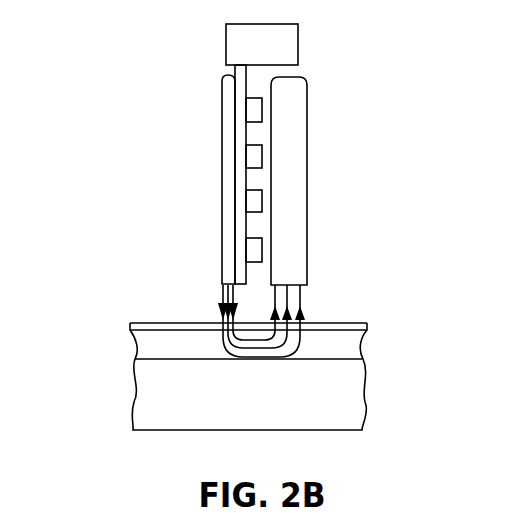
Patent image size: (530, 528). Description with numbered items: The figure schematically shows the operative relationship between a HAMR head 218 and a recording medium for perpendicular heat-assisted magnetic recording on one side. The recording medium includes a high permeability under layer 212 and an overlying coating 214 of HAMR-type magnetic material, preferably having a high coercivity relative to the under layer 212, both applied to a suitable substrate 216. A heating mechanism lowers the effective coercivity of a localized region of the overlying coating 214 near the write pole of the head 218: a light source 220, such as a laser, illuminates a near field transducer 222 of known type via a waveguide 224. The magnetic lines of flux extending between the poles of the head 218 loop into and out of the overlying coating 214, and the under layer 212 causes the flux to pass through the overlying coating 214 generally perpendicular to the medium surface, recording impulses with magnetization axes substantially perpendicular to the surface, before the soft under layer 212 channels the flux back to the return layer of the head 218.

The under layer 212 is at (138, 345).
The overlying coating 214 is at (157, 323).
The substrate 216 is at (219, 416).
The HAMR head 218 is at (307, 208).
The light source 220 is at (242, 56).
The near field transducer 222 is at (222, 282).
The waveguide 224 is at (247, 138).